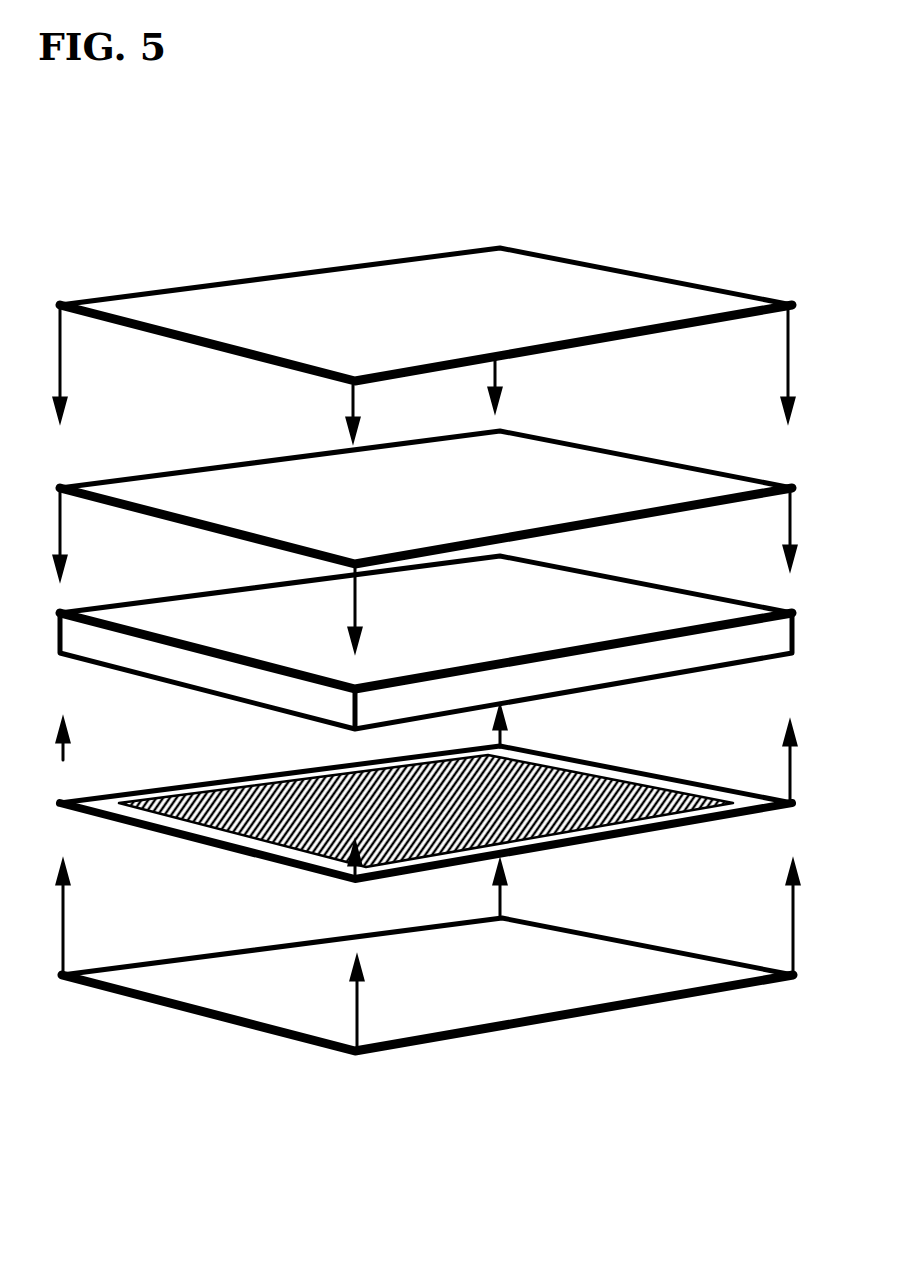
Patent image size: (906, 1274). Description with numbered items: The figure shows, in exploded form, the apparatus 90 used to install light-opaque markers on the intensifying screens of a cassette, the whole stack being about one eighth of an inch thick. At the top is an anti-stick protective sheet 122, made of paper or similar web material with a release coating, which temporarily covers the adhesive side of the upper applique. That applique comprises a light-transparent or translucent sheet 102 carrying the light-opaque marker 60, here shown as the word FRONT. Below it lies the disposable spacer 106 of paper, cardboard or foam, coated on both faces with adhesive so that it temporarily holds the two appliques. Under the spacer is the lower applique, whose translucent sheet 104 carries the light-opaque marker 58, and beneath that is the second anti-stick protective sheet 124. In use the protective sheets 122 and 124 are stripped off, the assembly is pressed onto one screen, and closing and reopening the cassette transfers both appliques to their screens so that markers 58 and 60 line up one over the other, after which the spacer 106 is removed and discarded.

The anti-stick protective sheet 122 is at (398, 330).
The light-transparent or translucent sheet 102 is at (637, 467).
The light-opaque marker 60 is at (288, 470).
The spacer 106 is at (479, 642).
The light-transparent or translucent sheet 104 is at (426, 789).
The light-opaque marker 58 is at (298, 790).
The anti-stick protective sheet 124 is at (433, 1008).
The apparatus 90 is at (344, 1200).